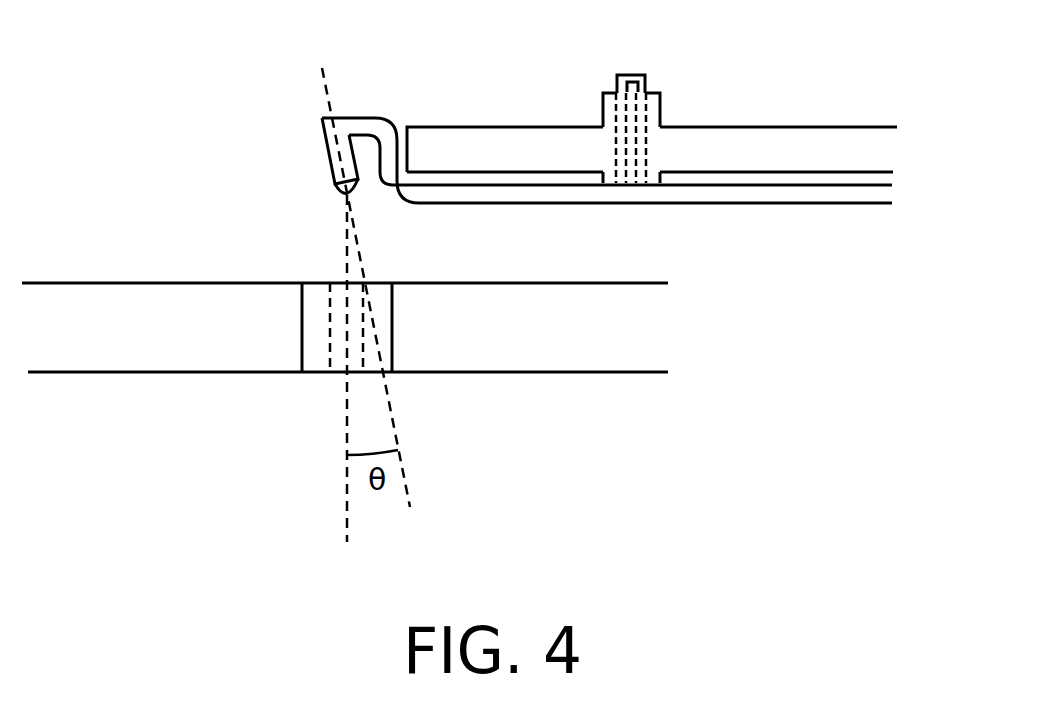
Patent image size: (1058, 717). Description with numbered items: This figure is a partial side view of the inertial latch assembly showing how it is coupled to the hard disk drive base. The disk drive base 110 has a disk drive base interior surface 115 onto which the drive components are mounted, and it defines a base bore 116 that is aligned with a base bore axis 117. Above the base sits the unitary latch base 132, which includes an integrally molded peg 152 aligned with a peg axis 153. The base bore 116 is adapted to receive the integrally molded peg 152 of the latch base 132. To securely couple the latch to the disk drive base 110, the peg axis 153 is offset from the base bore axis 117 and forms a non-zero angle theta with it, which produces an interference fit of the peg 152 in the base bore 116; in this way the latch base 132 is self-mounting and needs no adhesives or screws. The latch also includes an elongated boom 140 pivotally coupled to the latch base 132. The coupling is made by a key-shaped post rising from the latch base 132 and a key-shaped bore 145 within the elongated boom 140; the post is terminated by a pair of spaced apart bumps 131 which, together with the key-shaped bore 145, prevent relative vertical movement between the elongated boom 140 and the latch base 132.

The disk drive base 110 is at (391, 353).
The disk drive base interior surface 115 is at (627, 282).
The base bore 116 is at (330, 338).
The base bore axis 117 is at (347, 512).
The spaced apart bumps 131 is at (633, 82).
The unitary latch base 132 is at (828, 192).
The elongated boom 140 is at (503, 140).
The key-shaped bore 145 is at (632, 118).
The integrally molded peg 152 is at (327, 158).
The peg axis 153 is at (407, 472).